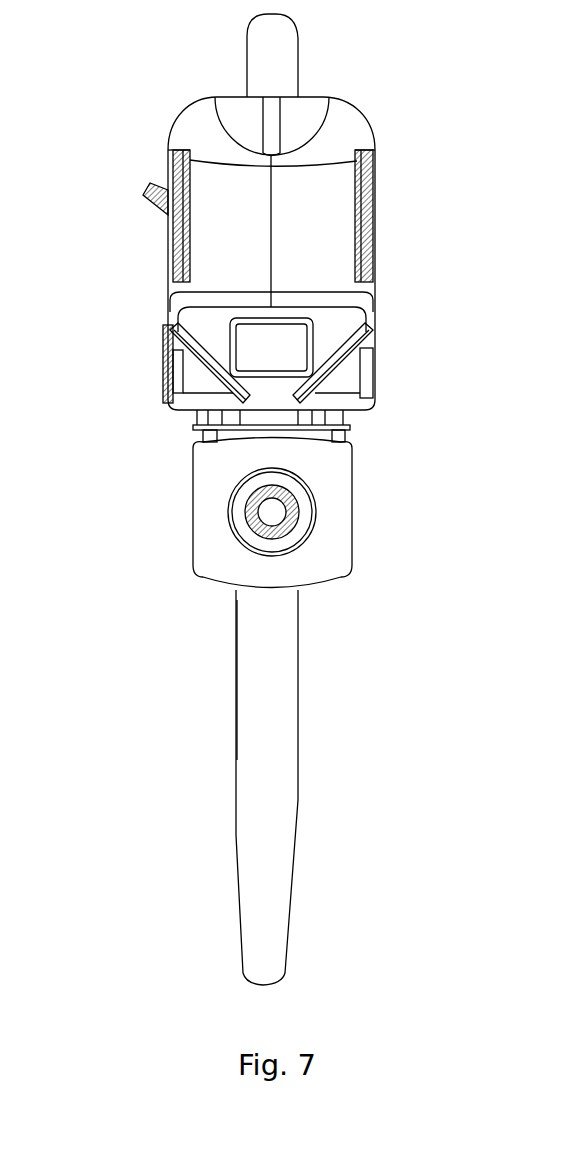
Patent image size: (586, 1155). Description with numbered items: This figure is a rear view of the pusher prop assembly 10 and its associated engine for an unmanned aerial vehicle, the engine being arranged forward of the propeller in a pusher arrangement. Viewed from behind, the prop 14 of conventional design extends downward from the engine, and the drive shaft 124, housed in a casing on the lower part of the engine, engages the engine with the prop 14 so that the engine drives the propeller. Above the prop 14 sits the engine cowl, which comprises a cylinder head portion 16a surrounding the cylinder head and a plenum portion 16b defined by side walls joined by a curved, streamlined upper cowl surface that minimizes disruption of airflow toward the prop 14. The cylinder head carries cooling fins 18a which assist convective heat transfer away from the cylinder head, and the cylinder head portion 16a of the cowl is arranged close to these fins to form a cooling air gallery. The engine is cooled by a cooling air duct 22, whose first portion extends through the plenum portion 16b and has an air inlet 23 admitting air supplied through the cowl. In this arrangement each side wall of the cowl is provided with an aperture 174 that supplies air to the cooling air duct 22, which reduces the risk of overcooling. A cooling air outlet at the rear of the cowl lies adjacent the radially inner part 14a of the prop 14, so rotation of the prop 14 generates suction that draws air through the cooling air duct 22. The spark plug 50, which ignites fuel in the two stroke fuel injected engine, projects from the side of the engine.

The pusher prop assembly 10 is at (325, 580).
The prop 14 is at (257, 860).
The radially inner part of the prop 14a is at (257, 662).
The cylinder head portion 16a is at (380, 383).
The plenum portion 16b is at (238, 187).
The cooling fins 18a is at (377, 317).
The cooling air duct 22 is at (167, 227).
The air inlet 23 is at (170, 153).
The spark plug 50 is at (155, 197).
The drive shaft 124 is at (283, 510).
The aperture 174 is at (168, 255).